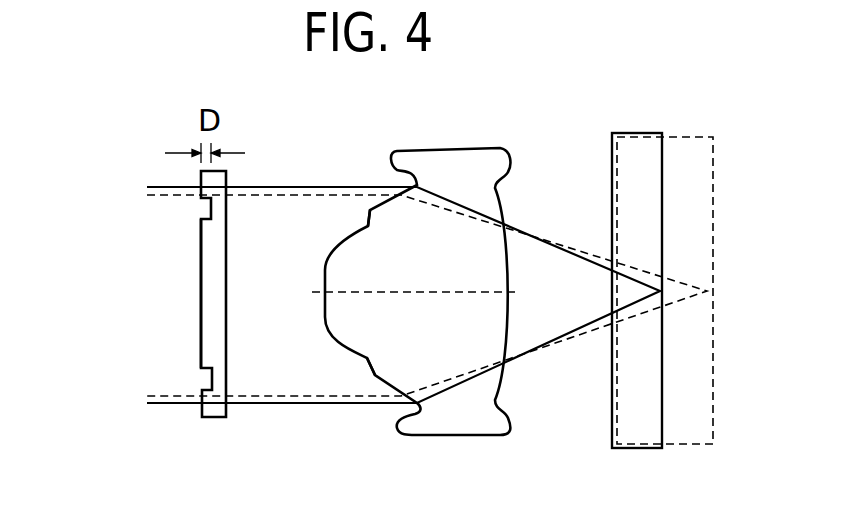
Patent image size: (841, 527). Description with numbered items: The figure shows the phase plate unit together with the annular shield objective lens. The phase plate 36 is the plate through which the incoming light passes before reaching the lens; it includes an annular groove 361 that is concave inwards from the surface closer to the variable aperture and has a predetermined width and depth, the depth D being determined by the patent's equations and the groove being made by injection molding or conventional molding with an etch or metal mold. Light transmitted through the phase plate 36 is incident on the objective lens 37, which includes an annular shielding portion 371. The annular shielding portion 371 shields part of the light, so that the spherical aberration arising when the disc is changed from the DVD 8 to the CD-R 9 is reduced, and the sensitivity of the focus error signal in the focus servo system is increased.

The DVD 8 is at (637, 133).
The CD-R 9 is at (695, 133).
The phase plate 36 is at (215, 418).
The annular groove 361 is at (200, 208).
The objective lens 37 is at (510, 420).
The annular shielding portion 371 is at (373, 218).